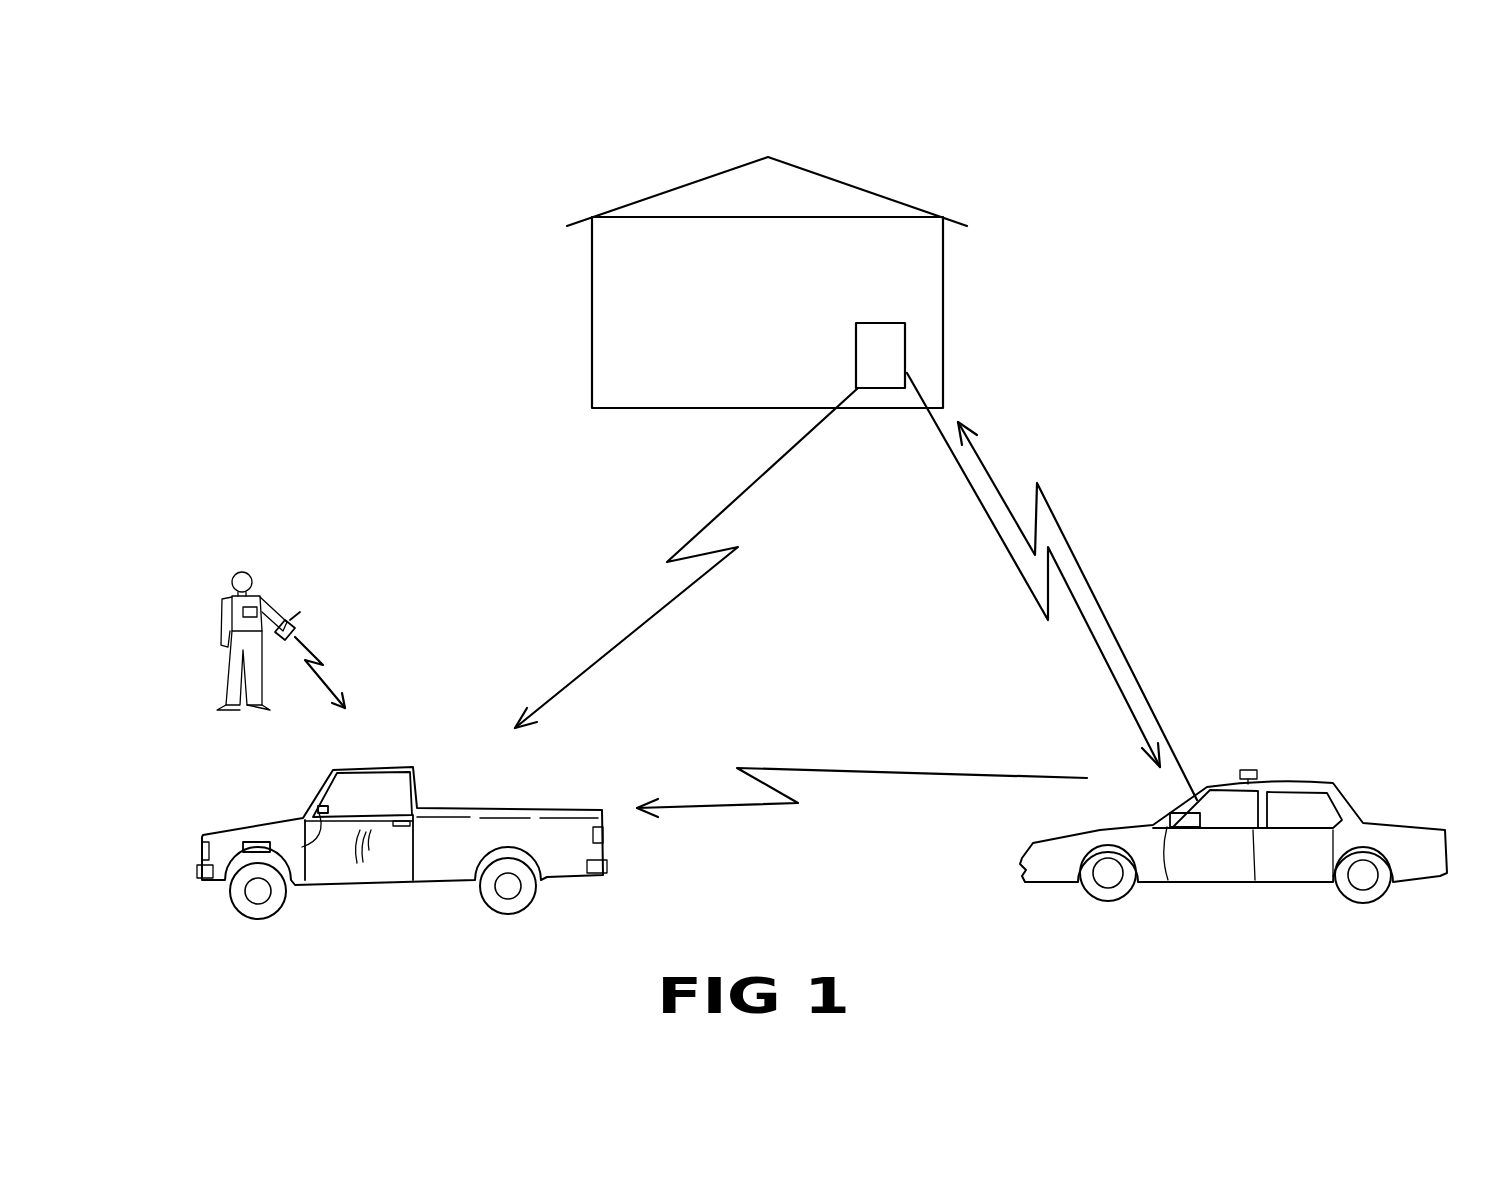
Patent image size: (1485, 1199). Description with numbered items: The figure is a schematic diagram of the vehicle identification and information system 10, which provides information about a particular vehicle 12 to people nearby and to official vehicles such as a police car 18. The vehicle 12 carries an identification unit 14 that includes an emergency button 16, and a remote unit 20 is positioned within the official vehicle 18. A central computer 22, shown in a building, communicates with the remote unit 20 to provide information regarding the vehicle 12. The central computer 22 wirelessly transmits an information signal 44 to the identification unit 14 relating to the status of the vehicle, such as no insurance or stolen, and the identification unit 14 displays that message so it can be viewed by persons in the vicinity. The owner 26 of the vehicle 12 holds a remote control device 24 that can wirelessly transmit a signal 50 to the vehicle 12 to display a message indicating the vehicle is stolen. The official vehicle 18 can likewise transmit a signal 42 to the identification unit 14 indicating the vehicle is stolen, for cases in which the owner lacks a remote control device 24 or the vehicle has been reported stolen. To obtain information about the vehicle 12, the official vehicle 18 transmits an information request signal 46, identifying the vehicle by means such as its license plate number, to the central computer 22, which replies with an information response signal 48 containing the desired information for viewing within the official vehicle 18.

The vehicle identification and information system 10 is at (470, 561).
The vehicle 12 is at (373, 765).
The identification unit 14 is at (247, 842).
The emergency button 16 is at (320, 807).
The police car 18 is at (1317, 783).
The remote unit 20 is at (1192, 827).
The central computer 22 is at (855, 355).
The remote control device 24 is at (288, 618).
The owner 26 is at (208, 606).
The signal 42 is at (830, 772).
The information signal 44 is at (675, 598).
The information request signal 46 is at (1093, 583).
The information response signal 48 is at (1020, 573).
The signal 50 is at (317, 657).